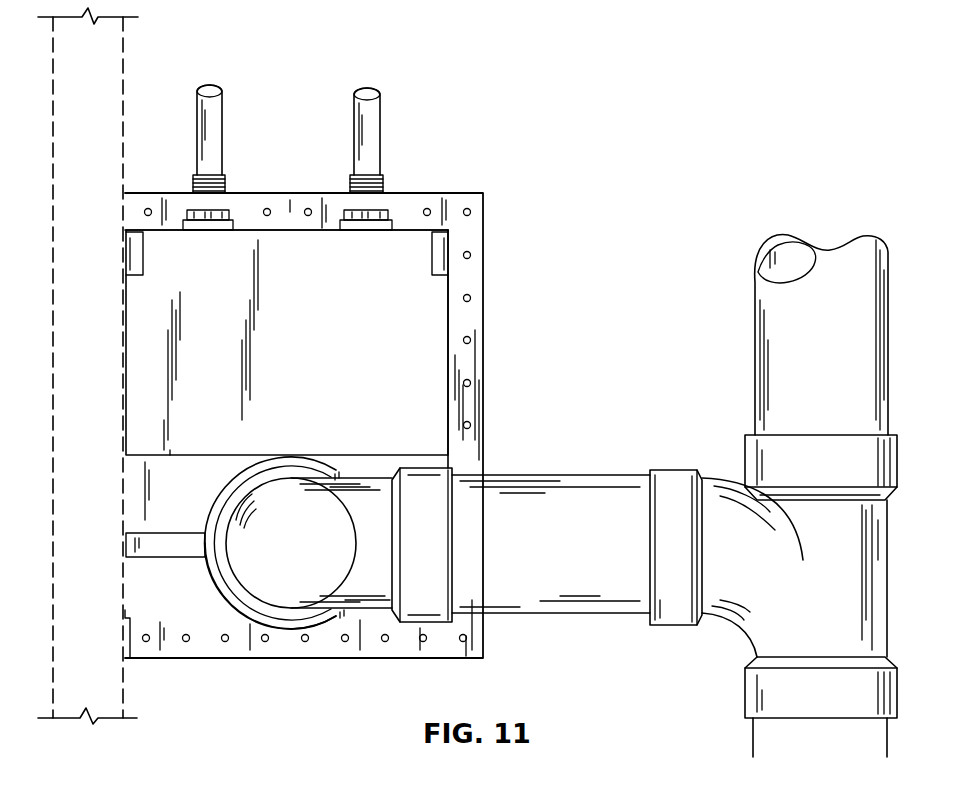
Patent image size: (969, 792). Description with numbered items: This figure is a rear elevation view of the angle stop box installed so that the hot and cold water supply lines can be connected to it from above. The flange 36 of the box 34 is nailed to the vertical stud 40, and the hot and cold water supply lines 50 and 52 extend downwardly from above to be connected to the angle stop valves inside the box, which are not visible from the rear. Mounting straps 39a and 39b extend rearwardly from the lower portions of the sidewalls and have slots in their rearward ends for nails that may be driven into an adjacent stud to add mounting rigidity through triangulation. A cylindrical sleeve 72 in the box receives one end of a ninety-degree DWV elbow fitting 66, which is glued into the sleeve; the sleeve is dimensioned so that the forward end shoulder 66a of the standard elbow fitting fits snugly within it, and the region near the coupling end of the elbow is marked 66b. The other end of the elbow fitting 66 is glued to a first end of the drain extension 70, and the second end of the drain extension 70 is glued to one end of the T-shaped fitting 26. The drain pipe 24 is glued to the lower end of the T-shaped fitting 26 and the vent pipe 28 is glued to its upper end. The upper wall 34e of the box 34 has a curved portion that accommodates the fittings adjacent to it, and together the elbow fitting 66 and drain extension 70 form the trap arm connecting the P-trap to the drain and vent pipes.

The vertical stud 40 is at (125, 32).
The flange 36 is at (290, 193).
The box 34 is at (317, 364).
The upper wall 34e is at (192, 502).
The mounting strap 39a is at (432, 275).
The mounting strap 39b is at (143, 272).
The hot water supply line 50 is at (222, 107).
The cold water supply line 52 is at (380, 115).
The cylindrical sleeve 72 is at (226, 478).
The elbow fitting 66 is at (320, 550).
The forward end shoulder 66a is at (233, 593).
The elbow coupling 66b is at (445, 578).
The drain extension 70 is at (582, 557).
The T-shaped fitting 26 is at (835, 607).
The vent pipe 28 is at (755, 327).
The drain pipe 24 is at (753, 735).